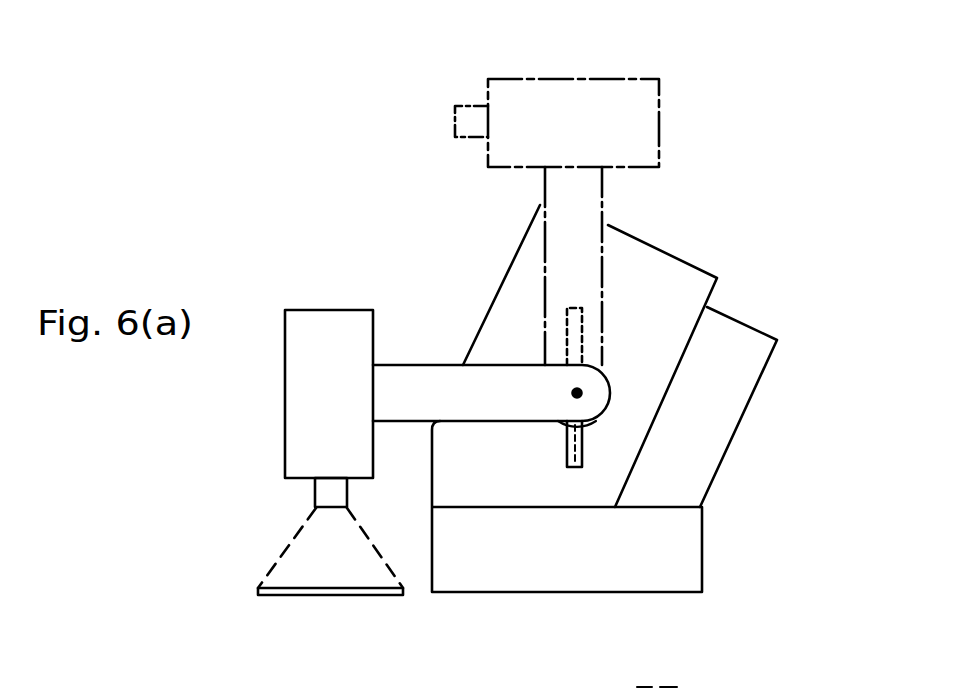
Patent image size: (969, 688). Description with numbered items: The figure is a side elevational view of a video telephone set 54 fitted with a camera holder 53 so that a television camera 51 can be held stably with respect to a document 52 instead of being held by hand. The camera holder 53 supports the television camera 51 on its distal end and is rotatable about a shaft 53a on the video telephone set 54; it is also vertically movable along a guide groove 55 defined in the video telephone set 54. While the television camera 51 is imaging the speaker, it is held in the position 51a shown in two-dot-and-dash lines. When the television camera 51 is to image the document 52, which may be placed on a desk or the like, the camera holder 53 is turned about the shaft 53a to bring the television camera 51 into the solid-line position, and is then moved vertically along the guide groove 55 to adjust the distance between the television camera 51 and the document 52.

The television camera 51 is at (320, 310).
The camera position for imaging the speaker 51a is at (626, 79).
The document 52 is at (340, 596).
The camera holder 53 is at (490, 422).
The shaft 53a is at (577, 393).
The video telephone set 54 is at (677, 252).
The guide groove 55 is at (582, 455).